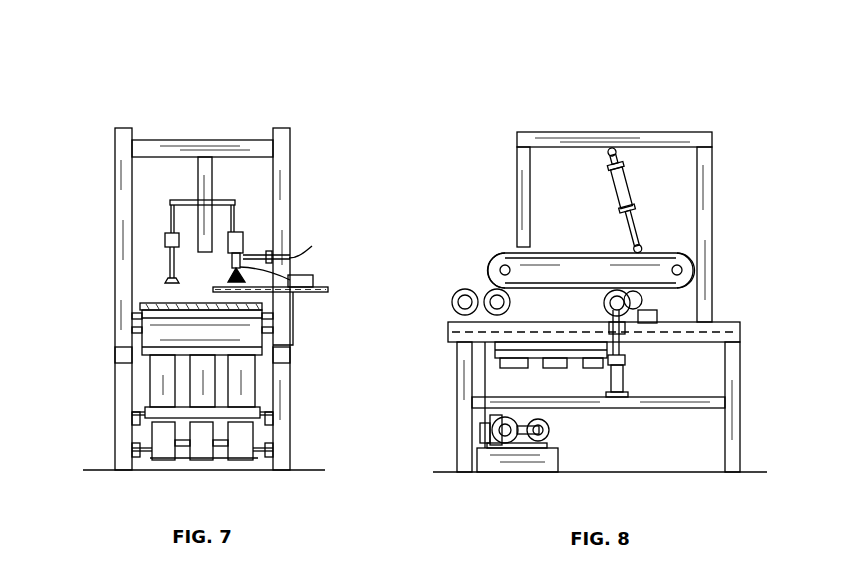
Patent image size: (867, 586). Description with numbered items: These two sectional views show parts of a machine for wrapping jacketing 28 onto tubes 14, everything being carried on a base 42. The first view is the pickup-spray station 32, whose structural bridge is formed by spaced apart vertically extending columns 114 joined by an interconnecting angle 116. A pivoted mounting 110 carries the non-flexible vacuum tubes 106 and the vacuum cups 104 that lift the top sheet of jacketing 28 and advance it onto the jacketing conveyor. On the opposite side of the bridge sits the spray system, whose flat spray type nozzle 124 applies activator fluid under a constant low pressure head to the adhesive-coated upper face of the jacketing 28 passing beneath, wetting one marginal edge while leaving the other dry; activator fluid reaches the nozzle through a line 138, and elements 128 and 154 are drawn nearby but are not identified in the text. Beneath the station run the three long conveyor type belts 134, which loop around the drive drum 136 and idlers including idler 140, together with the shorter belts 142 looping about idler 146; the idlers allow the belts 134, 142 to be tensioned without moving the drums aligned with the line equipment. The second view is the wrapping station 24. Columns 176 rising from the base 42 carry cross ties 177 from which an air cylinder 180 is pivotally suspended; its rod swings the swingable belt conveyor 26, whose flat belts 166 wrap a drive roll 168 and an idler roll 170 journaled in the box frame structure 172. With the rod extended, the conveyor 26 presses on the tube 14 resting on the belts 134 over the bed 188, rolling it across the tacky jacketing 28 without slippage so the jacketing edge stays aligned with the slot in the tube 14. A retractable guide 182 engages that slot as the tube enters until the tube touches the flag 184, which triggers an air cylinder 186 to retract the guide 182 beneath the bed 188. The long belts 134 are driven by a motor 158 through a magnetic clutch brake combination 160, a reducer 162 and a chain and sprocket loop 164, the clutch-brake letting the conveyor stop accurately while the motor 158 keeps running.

In FIG. 7, the base 42 is at (85, 396).
In FIG. 8, the base 42 is at (770, 375).
In FIG. 7, the pickup-spray station 32 is at (211, 89).
In FIG. 8, the wrapping station 24 is at (608, 93).
In FIG. 7, the columns 114 is at (115, 135).
In FIG. 7, the interconnecting angle 116 is at (197, 140).
In FIG. 7, the mounting 110 is at (200, 188).
In FIG. 7, the non-flexible vacuum tubes 106 is at (170, 266).
In FIG. 7, the vacuum cups 104 is at (165, 281).
In FIG. 7, the flat spray type nozzle 124 is at (226, 276).
In FIG. 7, the supply hose 128 is at (312, 246).
In FIG. 7, the support bracket 154 is at (328, 289).
In FIG. 7, the idler drum 138 is at (150, 308).
In FIG. 7, the jacketing 28 is at (245, 300).
In FIG. 8, the jacketing 28 is at (462, 290).
In FIG. 7, the conveyor type belts 134 is at (217, 312).
In FIG. 8, the conveyor type belts 134 is at (585, 368).
In FIG. 7, the idler drum 140 is at (258, 410).
In FIG. 7, the shorter conveyor type belts 142 is at (238, 462).
In FIG. 7, the idler drum 146 is at (258, 466).
In FIG. 8, the cross ties 177 is at (572, 132).
In FIG. 8, the columns 176 is at (518, 192).
In FIG. 8, the air cylinder 180 is at (616, 192).
In FIG. 8, the swingable belt conveyor 26 is at (492, 238).
In FIG. 8, the flat belts 166 is at (556, 253).
In FIG. 8, the box frame structure 172 is at (598, 245).
In FIG. 8, the drive roll 168 is at (488, 264).
In FIG. 8, the idler roll 170 is at (693, 264).
In FIG. 8, the retractable guide 182 is at (590, 270).
In FIG. 8, the tubes 14 is at (452, 305).
In FIG. 8, the flag 184 is at (660, 308).
In FIG. 8, the bed 188 is at (722, 325).
In FIG. 8, the drive drum 136 is at (498, 349).
In FIG. 8, the chain and sprocket loop 164 is at (485, 382).
In FIG. 8, the air cylinder 186 is at (628, 368).
In FIG. 8, the reducer 162 is at (500, 413).
In FIG. 8, the motor 158 is at (550, 432).
In FIG. 8, the magnetic clutch brake combination 160 is at (505, 455).